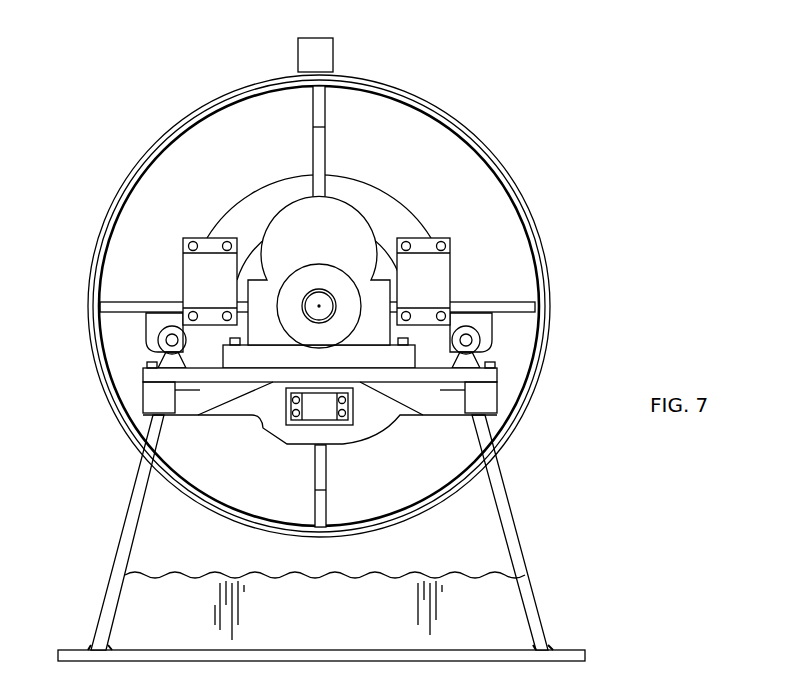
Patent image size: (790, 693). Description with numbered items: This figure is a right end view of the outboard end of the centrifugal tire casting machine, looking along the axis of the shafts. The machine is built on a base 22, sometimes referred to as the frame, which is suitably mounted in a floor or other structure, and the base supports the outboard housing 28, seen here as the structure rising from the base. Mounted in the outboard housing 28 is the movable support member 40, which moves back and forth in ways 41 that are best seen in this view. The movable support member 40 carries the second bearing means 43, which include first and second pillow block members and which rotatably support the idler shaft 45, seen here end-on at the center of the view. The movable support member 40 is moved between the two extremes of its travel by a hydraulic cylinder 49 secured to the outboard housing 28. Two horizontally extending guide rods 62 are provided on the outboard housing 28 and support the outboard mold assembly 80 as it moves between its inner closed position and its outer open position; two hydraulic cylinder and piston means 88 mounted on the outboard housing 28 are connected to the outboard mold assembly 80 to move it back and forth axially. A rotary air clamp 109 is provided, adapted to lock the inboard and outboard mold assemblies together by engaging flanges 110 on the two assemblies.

The base 22 is at (76, 650).
The outboard housing 28 is at (550, 609).
The movable support member 40 is at (301, 380).
The ways 41 is at (143, 394).
The second bearing means 43 is at (348, 240).
The idler shaft 45 is at (311, 298).
The hydraulic cylinder 49 is at (325, 412).
The guide rods 62 is at (171, 327).
The outboard mold assembly 80 is at (319, 303).
The hydraulic cylinder and piston means 88 is at (191, 270).
The rotary air clamp 109 is at (333, 50).
The flanges 110 is at (219, 96).